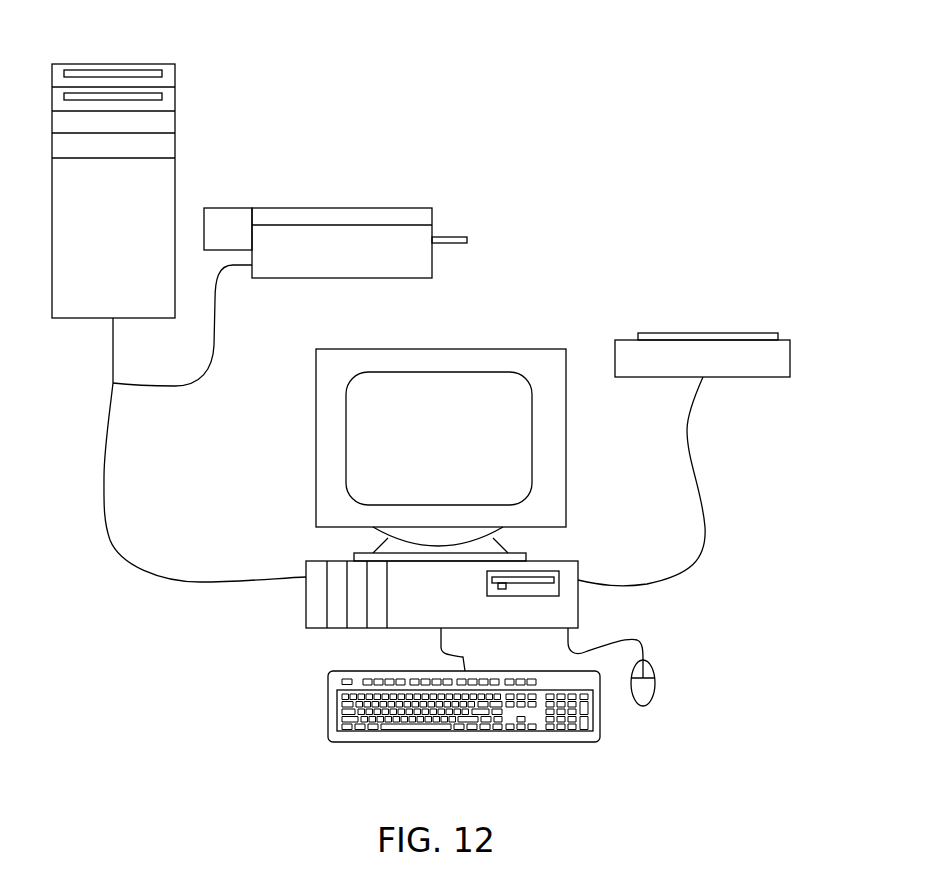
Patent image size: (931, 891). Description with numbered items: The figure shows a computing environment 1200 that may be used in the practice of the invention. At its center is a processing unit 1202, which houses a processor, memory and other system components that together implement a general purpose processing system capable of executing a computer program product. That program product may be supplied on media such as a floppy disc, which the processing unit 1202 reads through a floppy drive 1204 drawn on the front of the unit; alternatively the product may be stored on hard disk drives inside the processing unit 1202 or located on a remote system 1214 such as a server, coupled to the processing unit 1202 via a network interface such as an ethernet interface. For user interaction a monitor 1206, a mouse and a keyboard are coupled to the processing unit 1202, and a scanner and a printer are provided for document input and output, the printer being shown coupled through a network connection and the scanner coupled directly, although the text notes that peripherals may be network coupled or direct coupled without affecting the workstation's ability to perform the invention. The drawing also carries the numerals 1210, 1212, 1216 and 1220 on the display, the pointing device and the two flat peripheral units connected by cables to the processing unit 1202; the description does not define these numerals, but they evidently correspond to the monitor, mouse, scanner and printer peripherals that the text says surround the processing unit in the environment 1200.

The computing environment 1200 is at (602, 105).
The processing unit 1202 is at (306, 611).
The floppy drive 1204 is at (559, 582).
The monitor 1206 is at (175, 184).
The monitor 1210 is at (516, 349).
The mouse 1212 is at (655, 695).
The remote system 1214 is at (328, 706).
The external device / scanner 1216 is at (732, 333).
The printer / peripheral device 1220 is at (388, 208).